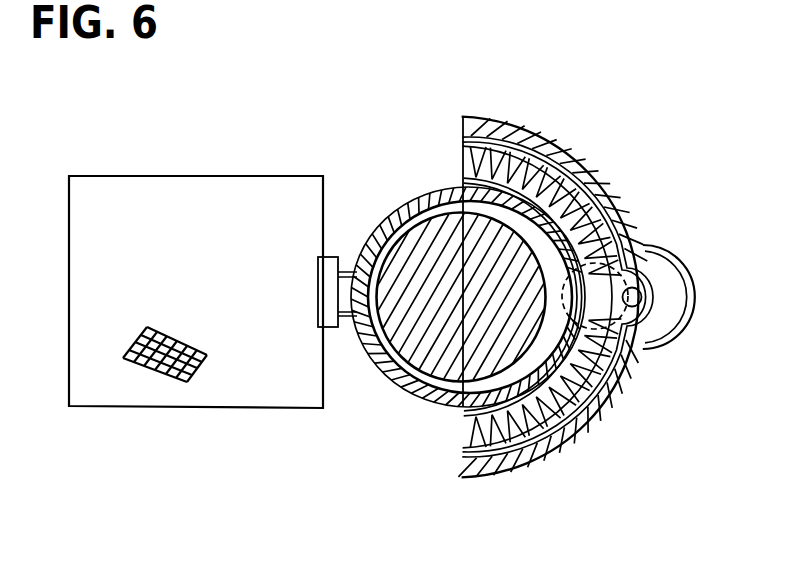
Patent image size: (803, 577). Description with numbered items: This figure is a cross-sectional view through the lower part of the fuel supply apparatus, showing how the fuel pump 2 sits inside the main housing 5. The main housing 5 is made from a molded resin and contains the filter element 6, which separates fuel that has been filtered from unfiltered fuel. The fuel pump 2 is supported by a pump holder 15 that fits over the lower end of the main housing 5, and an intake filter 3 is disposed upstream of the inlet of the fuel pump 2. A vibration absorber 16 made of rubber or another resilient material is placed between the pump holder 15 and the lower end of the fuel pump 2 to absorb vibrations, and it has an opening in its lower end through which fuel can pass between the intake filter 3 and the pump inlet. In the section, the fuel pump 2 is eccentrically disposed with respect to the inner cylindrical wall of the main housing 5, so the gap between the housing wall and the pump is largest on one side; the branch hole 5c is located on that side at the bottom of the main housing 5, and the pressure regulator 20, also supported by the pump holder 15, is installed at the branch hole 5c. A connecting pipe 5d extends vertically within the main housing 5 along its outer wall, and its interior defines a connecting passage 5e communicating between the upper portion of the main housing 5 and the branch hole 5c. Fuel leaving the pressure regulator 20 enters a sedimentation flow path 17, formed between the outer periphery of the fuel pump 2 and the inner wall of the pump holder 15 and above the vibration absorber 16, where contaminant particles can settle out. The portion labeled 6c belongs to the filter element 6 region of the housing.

The fuel pump 2 is at (403, 250).
The intake filter 3 is at (172, 176).
The main housing 5 is at (577, 448).
The branch hole 5c is at (632, 345).
The connecting pipe 5d is at (640, 276).
The connecting passage 5e is at (642, 298).
The filter element 6 is at (573, 167).
The sleeve 6c is at (464, 178).
The pump holder 15 is at (462, 408).
The vibration absorber 16 is at (430, 398).
The sedimentation flow path 17 is at (380, 364).
The pressure regulator 20 is at (675, 256).